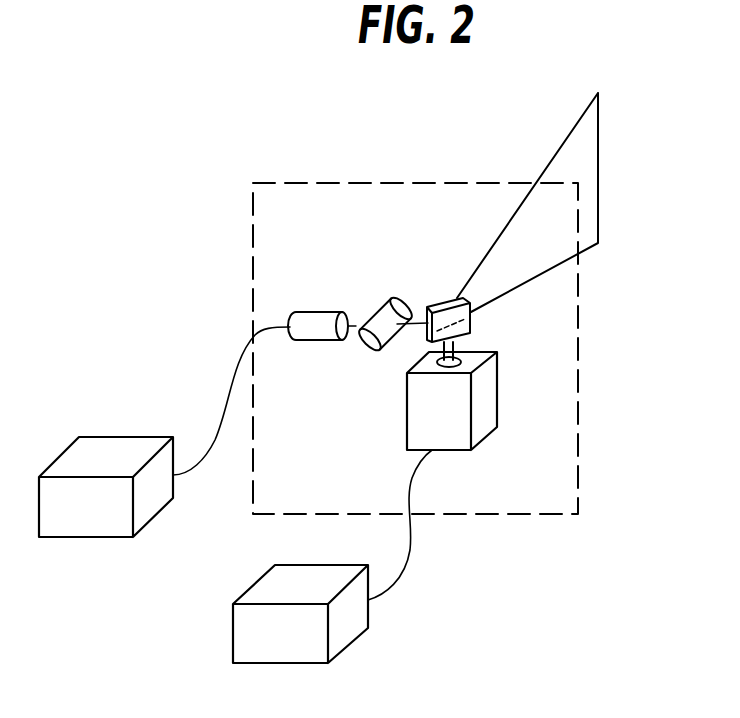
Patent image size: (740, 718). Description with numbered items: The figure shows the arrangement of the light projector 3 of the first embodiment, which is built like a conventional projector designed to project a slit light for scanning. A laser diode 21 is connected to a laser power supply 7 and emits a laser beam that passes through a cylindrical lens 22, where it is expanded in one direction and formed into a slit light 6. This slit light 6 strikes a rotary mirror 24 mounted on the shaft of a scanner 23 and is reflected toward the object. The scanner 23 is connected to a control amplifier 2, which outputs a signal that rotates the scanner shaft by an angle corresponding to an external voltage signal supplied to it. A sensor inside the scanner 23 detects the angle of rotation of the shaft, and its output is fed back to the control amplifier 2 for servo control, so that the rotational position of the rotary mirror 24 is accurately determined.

The control amplifier 2 is at (360, 622).
The light projector 3 is at (578, 414).
The slit light 6 is at (599, 167).
The laser power supply 7 is at (87, 523).
The laser diode 21 is at (315, 340).
The cylindrical lens 22 is at (387, 345).
The scanner 23 is at (495, 428).
The rotary mirror 24 is at (430, 306).